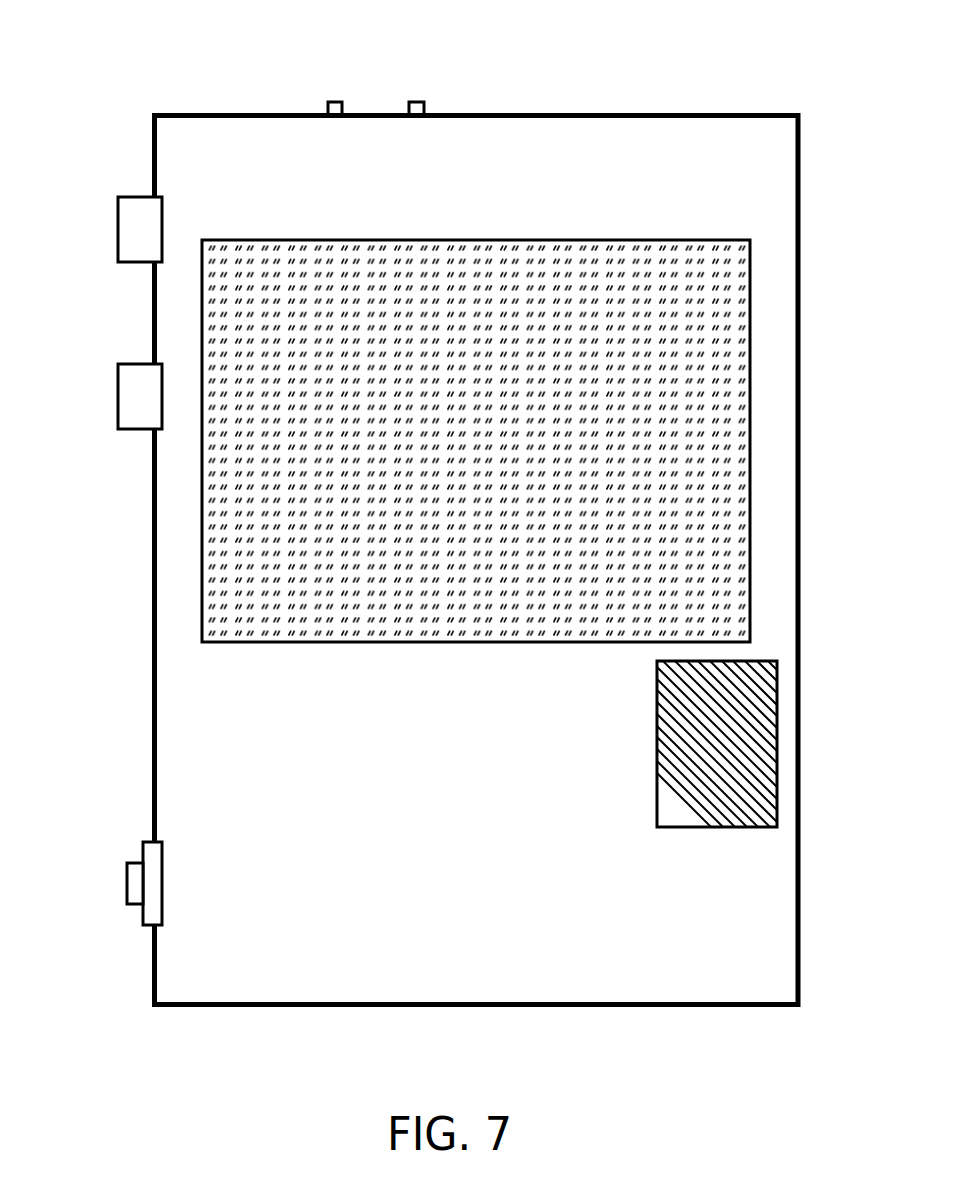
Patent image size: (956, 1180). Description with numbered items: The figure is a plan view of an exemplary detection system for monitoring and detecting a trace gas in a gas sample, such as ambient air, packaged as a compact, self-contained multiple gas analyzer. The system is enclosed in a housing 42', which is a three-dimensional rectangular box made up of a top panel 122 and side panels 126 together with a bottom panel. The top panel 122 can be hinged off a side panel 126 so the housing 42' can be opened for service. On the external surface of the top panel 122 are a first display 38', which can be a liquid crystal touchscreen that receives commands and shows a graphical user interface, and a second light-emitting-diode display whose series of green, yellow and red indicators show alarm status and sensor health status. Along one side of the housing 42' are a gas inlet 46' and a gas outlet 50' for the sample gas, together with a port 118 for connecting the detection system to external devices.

The housing 42' is at (477, 504).
The top panel 122 is at (713, 115).
The side panels 126 is at (126, 578).
The gas inlet 46' is at (106, 229).
The gas outlet 50' is at (106, 396).
The port 118 is at (127, 883).
The first display 38' is at (533, 441).